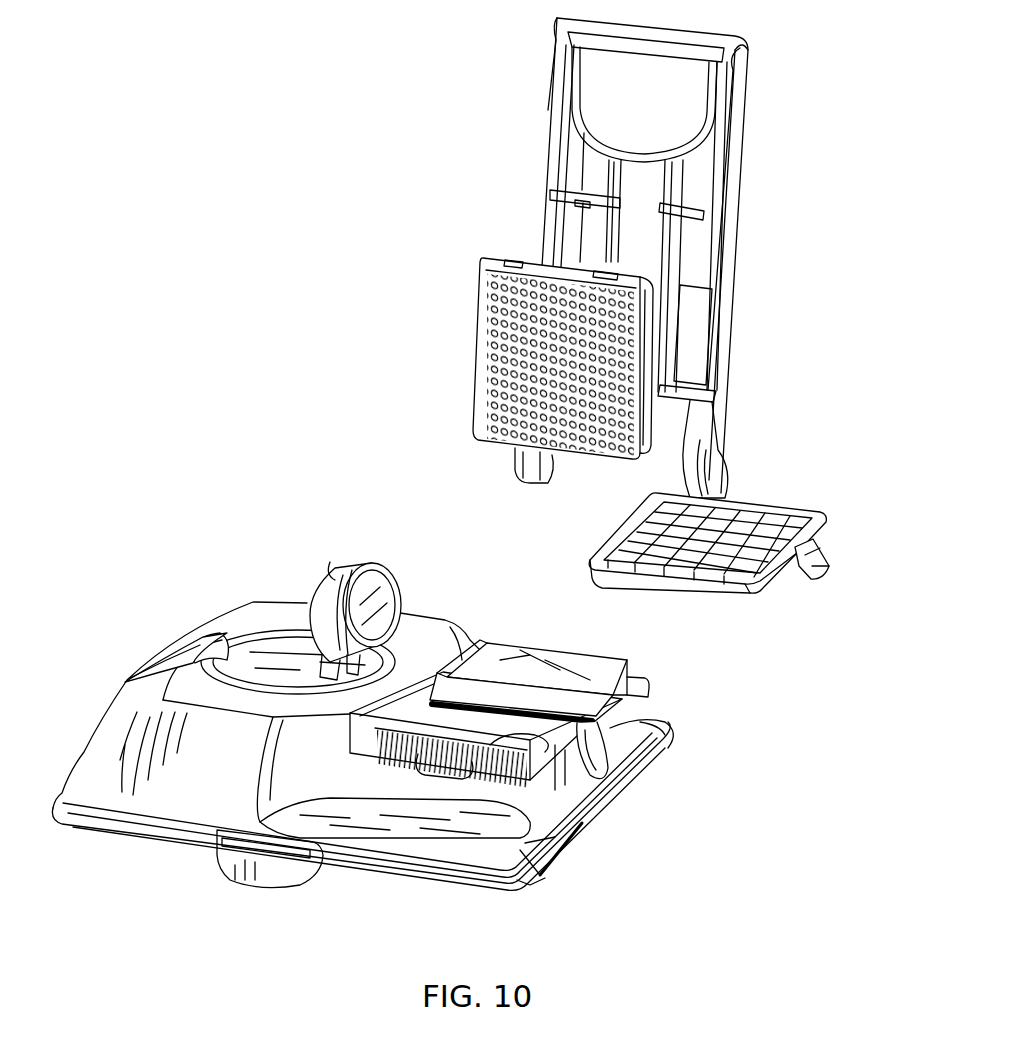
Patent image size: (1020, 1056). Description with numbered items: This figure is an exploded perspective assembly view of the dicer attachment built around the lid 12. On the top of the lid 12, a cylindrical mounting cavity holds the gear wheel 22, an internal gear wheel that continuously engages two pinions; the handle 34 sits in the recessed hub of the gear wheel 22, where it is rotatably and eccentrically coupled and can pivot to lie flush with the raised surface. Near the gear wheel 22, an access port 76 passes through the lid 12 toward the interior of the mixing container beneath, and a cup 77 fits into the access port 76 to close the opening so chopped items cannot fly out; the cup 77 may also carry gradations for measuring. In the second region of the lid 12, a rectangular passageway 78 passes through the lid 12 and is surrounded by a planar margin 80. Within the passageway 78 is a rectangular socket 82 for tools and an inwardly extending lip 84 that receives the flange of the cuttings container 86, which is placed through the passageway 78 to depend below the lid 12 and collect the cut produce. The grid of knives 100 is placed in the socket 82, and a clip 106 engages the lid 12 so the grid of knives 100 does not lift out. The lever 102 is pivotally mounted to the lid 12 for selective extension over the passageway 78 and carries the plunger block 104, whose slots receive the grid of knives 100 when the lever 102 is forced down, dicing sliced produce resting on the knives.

The lid 12 is at (250, 603).
The gear wheel 22 is at (255, 680).
The handle 34 is at (390, 597).
The access port 76 is at (188, 648).
The cup 77 is at (147, 668).
The rectangular passageway 78 is at (493, 673).
The planar margin 80 is at (545, 663).
The rectangular socket 82 is at (595, 690).
The inwardly extending lip 84 is at (670, 733).
The cuttings container 86 is at (570, 847).
The grid of knives 100 is at (770, 512).
The lever 102 is at (738, 200).
The plunger block 104 is at (497, 258).
The clip 106 is at (797, 585).